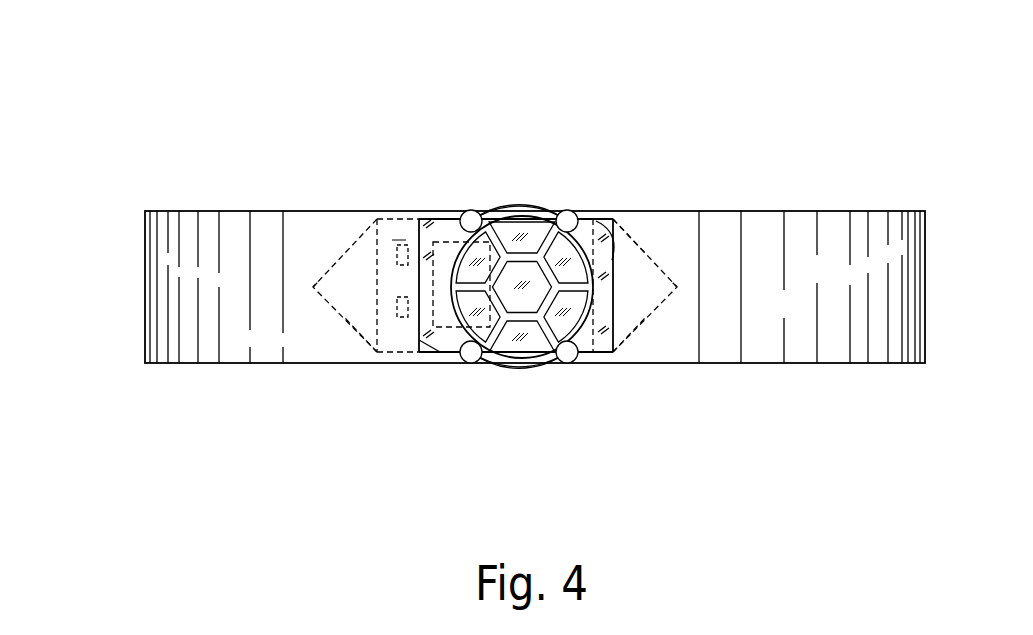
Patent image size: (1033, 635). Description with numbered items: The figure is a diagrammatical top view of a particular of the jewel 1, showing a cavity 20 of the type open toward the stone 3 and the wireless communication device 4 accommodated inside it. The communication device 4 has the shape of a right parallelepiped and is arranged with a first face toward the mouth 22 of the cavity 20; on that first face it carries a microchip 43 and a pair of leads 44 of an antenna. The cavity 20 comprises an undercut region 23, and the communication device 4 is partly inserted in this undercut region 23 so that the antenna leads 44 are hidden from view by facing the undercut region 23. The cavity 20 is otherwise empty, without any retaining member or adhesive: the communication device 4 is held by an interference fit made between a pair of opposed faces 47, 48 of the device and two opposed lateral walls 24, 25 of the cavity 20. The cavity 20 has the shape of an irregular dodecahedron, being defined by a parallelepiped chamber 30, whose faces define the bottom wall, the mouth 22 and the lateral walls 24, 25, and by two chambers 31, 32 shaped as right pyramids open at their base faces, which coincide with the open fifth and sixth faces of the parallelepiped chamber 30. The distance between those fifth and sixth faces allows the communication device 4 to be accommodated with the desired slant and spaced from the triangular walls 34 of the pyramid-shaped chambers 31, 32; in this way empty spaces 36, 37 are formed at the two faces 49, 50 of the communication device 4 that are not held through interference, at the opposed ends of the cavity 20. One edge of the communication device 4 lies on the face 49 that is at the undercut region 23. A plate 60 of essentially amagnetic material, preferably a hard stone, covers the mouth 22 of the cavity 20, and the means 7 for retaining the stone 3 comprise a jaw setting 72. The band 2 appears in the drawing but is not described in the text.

The jewel 1 is at (110, 465).
The wristband 2 is at (158, 268).
The stone 3 is at (526, 226).
The communication device 4 is at (391, 210).
The means for retaining stone 7 is at (532, 356).
The jaw setting 72 is at (540, 400).
The cavity 20 is at (666, 246).
The mouth 22 is at (592, 228).
The undercut region 23 is at (394, 240).
The lateral wall 24 is at (516, 228).
The face 47 is at (452, 218).
The lateral wall 25 is at (607, 402).
The face 48 is at (586, 354).
The parallelepiped chamber 30 is at (451, 357).
The pyramid-shaped chamber 31 is at (345, 328).
The pyramid-shaped chamber 32 is at (647, 330).
The triangular walls 34 is at (313, 300).
The empty space 36 is at (345, 285).
The empty space 37 is at (645, 285).
The microchip 43 is at (440, 320).
The leads 44 is at (400, 243).
The face 49 is at (375, 252).
The face 50 is at (600, 250).
The plate 60 is at (410, 217).